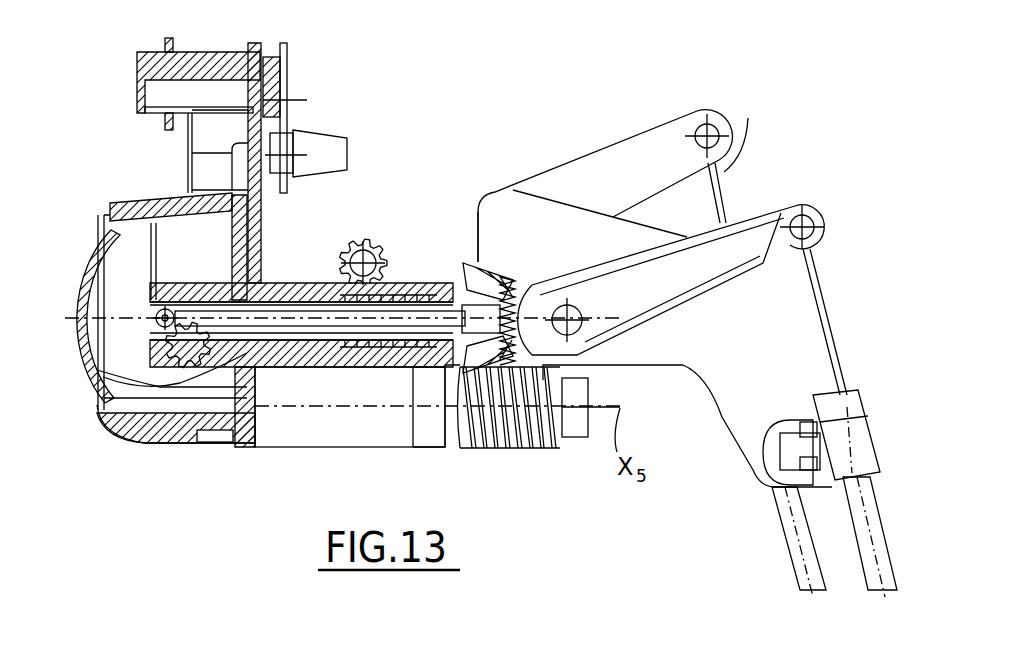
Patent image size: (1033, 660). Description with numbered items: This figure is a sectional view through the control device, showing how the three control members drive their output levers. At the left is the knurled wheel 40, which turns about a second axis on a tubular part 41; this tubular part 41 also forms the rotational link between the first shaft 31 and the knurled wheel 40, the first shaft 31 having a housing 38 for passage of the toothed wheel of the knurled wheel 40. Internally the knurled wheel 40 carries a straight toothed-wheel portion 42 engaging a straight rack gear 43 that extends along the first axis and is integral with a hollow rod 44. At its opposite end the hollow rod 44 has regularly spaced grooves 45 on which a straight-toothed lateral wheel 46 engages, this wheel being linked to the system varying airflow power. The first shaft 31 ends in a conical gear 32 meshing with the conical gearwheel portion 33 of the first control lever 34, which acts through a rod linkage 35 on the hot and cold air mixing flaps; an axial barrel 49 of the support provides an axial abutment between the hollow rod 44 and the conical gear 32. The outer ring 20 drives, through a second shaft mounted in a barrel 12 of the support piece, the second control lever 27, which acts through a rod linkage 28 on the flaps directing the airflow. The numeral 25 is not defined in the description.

The barrel 12 is at (317, 450).
The outer ring 20 is at (128, 204).
The worm wheel 25 is at (547, 450).
The second control lever 27 is at (613, 157).
The rod linkage 28 is at (738, 130).
The first shaft 31 is at (322, 288).
The conical gear 32 is at (448, 445).
The conical gearwheel portion 33 is at (460, 453).
The first control lever 34 is at (773, 207).
The rod linkage 35 is at (818, 308).
The housing 38 is at (198, 316).
The knurled wheel 40 is at (140, 390).
The tubular part 41 is at (113, 265).
The straight toothed-wheel portion 42 is at (103, 377).
The straight rack gear 43 is at (187, 447).
The hollow rod 44 is at (275, 295).
The grooves 45 is at (413, 447).
The lateral wheel 46 is at (378, 243).
The axial barrel 49 is at (440, 285).